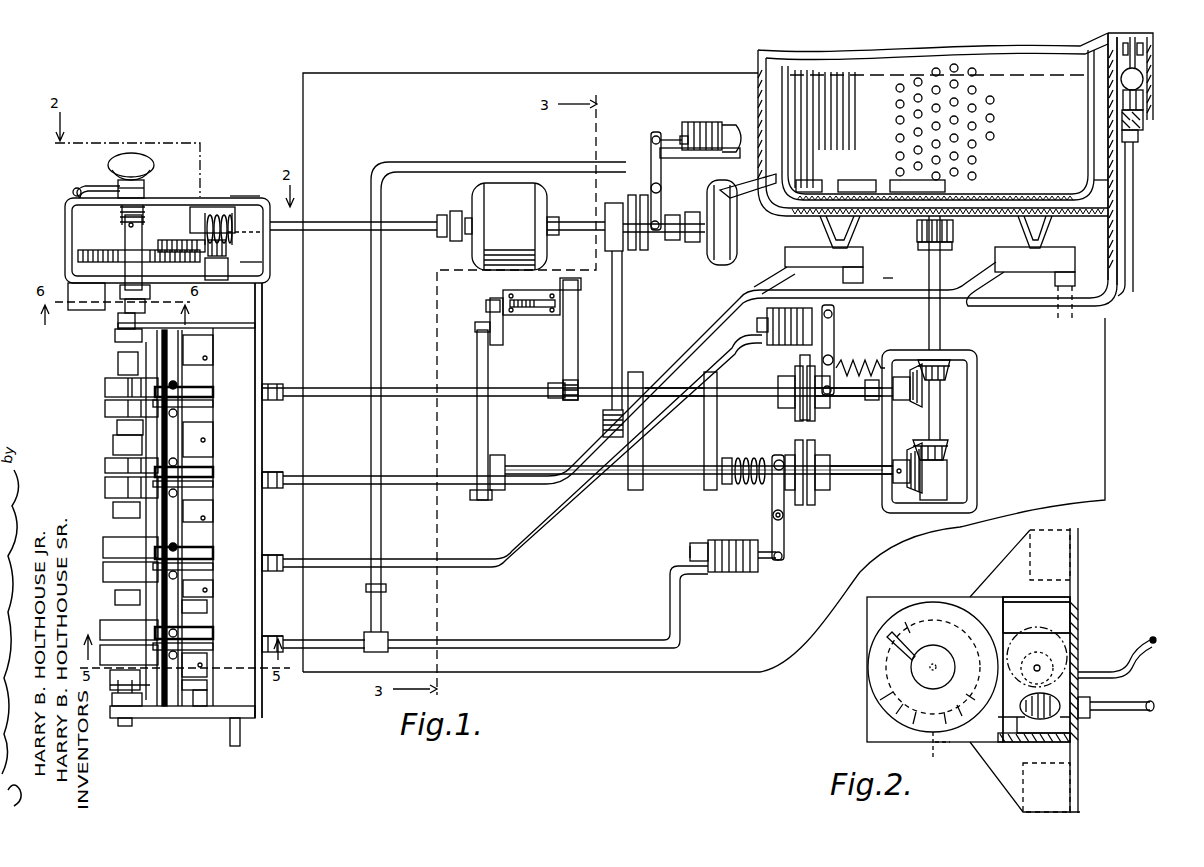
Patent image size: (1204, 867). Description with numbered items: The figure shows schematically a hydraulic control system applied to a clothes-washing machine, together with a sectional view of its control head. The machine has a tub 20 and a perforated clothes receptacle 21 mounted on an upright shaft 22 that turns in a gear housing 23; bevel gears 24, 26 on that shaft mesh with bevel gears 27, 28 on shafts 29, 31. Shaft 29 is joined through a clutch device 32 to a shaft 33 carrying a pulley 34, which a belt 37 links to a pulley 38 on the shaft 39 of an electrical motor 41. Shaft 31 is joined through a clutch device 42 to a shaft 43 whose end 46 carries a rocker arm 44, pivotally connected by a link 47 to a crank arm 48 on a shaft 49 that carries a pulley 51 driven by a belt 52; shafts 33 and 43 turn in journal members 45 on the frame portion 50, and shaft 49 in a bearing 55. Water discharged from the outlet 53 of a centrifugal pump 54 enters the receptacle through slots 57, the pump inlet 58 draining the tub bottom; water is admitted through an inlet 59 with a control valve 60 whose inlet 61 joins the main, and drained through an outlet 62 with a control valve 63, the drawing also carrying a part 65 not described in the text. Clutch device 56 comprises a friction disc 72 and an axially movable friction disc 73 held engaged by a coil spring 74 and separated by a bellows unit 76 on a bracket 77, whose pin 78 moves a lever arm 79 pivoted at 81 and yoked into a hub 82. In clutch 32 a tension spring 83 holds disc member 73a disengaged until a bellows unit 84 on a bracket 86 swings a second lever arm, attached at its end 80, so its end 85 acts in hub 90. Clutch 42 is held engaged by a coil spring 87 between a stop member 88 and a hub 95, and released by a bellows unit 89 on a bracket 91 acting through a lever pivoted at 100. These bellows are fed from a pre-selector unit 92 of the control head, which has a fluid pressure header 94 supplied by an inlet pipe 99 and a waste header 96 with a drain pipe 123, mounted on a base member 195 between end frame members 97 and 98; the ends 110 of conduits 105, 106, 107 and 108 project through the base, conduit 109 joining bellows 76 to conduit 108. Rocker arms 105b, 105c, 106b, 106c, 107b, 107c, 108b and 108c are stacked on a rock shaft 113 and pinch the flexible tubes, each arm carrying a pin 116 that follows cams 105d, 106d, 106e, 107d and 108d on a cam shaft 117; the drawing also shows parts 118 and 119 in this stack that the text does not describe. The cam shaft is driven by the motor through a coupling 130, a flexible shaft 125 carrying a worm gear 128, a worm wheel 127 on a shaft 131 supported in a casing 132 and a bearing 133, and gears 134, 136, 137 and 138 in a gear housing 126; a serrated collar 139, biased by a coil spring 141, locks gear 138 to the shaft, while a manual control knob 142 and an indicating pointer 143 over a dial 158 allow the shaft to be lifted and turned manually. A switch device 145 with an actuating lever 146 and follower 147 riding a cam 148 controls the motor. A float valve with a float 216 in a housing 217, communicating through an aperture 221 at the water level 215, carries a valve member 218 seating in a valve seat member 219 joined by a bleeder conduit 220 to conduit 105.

In FIG. 1, the tub 20 is at (1118, 160).
In FIG. 1, the clothes receptacle 21 is at (1094, 181).
In FIG. 1, the upright shaft 22 is at (942, 334).
In FIG. 1, the gear housing 23 is at (977, 410).
In FIG. 1, the bevel gear 24 is at (952, 370).
In FIG. 1, the bevel gear 26 is at (950, 452).
In FIG. 1, the bevel gear 27 is at (914, 368).
In FIG. 1, the bevel gear 28 is at (912, 498).
In FIG. 1, the shaft 29 is at (883, 400).
In FIG. 1, the shaft 31 is at (850, 476).
In FIG. 1, the clutch device 32 is at (790, 421).
In FIG. 1, the shaft 33 is at (766, 396).
In FIG. 1, the pulley 34 is at (623, 350).
In FIG. 1, the belt 37 is at (623, 306).
In FIG. 1, the pulley 38 is at (610, 221).
In FIG. 1, the motor shaft 39 is at (566, 222).
In FIG. 1, the electrical motor 41 is at (476, 198).
In FIG. 1, the clutch device 42 is at (826, 449).
In FIG. 1, the shaft 43 is at (676, 474).
In FIG. 1, the rocker arm 44 is at (500, 458).
In FIG. 1, the journal members 45 is at (645, 452).
In FIG. 1, the end of shaft 43 46 is at (535, 466).
In FIG. 1, the link 47 is at (489, 426).
In FIG. 1, the crank arm 48 is at (490, 325).
In FIG. 1, the shaft 49 is at (535, 310).
In FIG. 1, the frame portion 50 is at (598, 84).
In FIG. 1, the pulley 51 is at (578, 308).
In FIG. 1, the belt 52 is at (572, 355).
In FIG. 1, the pump outlet 53 is at (778, 176).
In FIG. 1, the centrifugal pump 54 is at (712, 258).
In FIG. 1, the bearing 55 is at (515, 295).
In FIG. 1, the clutch device 56 is at (644, 264).
In FIG. 1, the slots 57 is at (878, 180).
In FIG. 1, the pump inlet 58 is at (776, 264).
In FIG. 1, the inlet 59 is at (1048, 240).
In FIG. 1, the control valve 60 is at (694, 246).
In FIG. 1, the inlet to control valve 61 is at (1075, 270).
In FIG. 1, the outlet 62 is at (846, 240).
In FIG. 1, the control valve 63 is at (871, 260).
In FIG. 1, the pipe 65 is at (895, 277).
In FIG. 1, the friction disc 72 is at (632, 200).
In FIG. 1, the friction disc 73 is at (651, 175).
In FIG. 1, the coil spring 74 is at (680, 228).
In FIG. 1, the bellows unit 76 is at (702, 124).
In FIG. 1, the bracket 77 is at (738, 128).
In FIG. 1, the pin 78 is at (672, 136).
In FIG. 1, the lever arm 79 is at (654, 137).
In FIG. 1, the end of lever arm 79a 80 is at (838, 314).
In FIG. 1, the pivot 81 is at (662, 188).
In FIG. 1, the hub 82 is at (657, 238).
In FIG. 1, the tension spring 83 is at (858, 362).
In FIG. 1, the bellows unit 84 is at (790, 316).
In FIG. 1, the end of lever arm 79a 85 is at (825, 394).
In FIG. 1, the bracket 86 is at (757, 324).
In FIG. 1, the coil spring 87 is at (752, 484).
In FIG. 1, the stop member 88 is at (726, 484).
In FIG. 1, the bellows unit 89 is at (740, 572).
In FIG. 1, the hub 90 is at (796, 399).
In FIG. 1, the bracket 91 is at (694, 543).
In FIG. 1, the pre-selector unit 92 is at (100, 443).
In FIG. 2, the fluid pressure header 94 is at (1060, 790).
In FIG. 1, the hub 95 is at (778, 458).
In FIG. 1, the waste header 96 is at (240, 706).
In FIG. 2, the waste header 96 is at (1062, 538).
In FIG. 1, the end frame member 97 is at (222, 330).
In FIG. 2, the end frame member 97 is at (1003, 568).
In FIG. 1, the end frame member 98 is at (148, 718).
In FIG. 1, the inlet pipe 99 is at (236, 188).
In FIG. 1, the pivot 100 is at (773, 515).
In FIG. 1, the conduit 105 is at (430, 483).
In FIG. 1, the conduit 106 is at (430, 396).
In FIG. 2, the conduit 106 is at (1152, 644).
In FIG. 1, the conduit 107 is at (415, 560).
In FIG. 1, the conduit 108 is at (417, 642).
In FIG. 1, the conduit 109 is at (382, 312).
In FIG. 1, the conduit ends 110 is at (270, 472).
In FIG. 1, the rock shaft 113 is at (198, 706).
In FIG. 1, the pin 116 is at (148, 567).
In FIG. 1, the cam shaft 117 is at (118, 352).
In FIG. 1, the bearing 118 is at (118, 686).
In FIG. 1, the pivot 119 is at (177, 547).
In FIG. 1, the drain pipe 123 is at (240, 745).
In FIG. 1, the flexible shaft 125 is at (317, 226).
In FIG. 2, the flexible shaft 125 is at (1130, 702).
In FIG. 1, the gear housing 126 is at (65, 220).
In FIG. 2, the gear housing 126 is at (1072, 616).
In FIG. 2, the worm wheel 127 is at (1050, 700).
In FIG. 1, the worm gear 128 is at (225, 215).
In FIG. 2, the worm gear 128 is at (1034, 735).
In FIG. 1, the coupling 130 is at (448, 234).
In FIG. 1, the shaft 131 is at (226, 246).
In FIG. 2, the shaft 131 is at (1070, 653).
In FIG. 1, the casing 132 is at (252, 237).
In FIG. 2, the casing 132 is at (1056, 645).
In FIG. 1, the bearing 133 is at (262, 283).
In FIG. 1, the gear 134 is at (228, 268).
In FIG. 1, the gear 136 is at (190, 216).
In FIG. 1, the gear 137 is at (180, 242).
In FIG. 1, the gear 138 is at (96, 250).
In FIG. 1, the serrated collar 139 is at (125, 220).
In FIG. 1, the coil spring 141 is at (145, 207).
In FIG. 1, the manual control knob 142 is at (135, 152).
In FIG. 1, the indicating pointer 143 is at (95, 186).
In FIG. 1, the switch device 145 is at (84, 322).
In FIG. 1, the actuating lever 146 is at (118, 320).
In FIG. 1, the follower 147 is at (145, 292).
In FIG. 1, the cam 148 is at (145, 306).
In FIG. 1, the dial 158 is at (73, 192).
In FIG. 2, the dial 158 is at (1036, 617).
In FIG. 1, the base member 195 is at (263, 696).
In FIG. 2, the base member 195 is at (1080, 562).
In FIG. 1, the water level 215 is at (1015, 76).
In FIG. 1, the float 216 is at (1143, 82).
In FIG. 1, the housing 217 is at (1148, 96).
In FIG. 1, the valve member 218 is at (1143, 122).
In FIG. 1, the valve seat member 219 is at (1140, 137).
In FIG. 1, the bleeder conduit 220 is at (1134, 276).
In FIG. 1, the aperture 221 is at (1088, 92).
In FIG. 1, the cam 106e is at (105, 382).
In FIG. 1, the cam 106d is at (105, 405).
In FIG. 1, the rocker arm 106c is at (205, 392).
In FIG. 1, the rocker arm 106b is at (200, 404).
In FIG. 1, the rocker arm 105c is at (105, 470).
In FIG. 1, the cam 105d is at (105, 494).
In FIG. 1, the rocker arm 105b is at (200, 485).
In FIG. 1, the rocker arm 107c is at (222, 537).
In FIG. 1, the cam 107d is at (130, 572).
In FIG. 1, the rocker arm 107b is at (203, 567).
In FIG. 1, the rocker arm 108c is at (222, 622).
In FIG. 1, the cam 108d is at (129, 655).
In FIG. 1, the rocker arm 108b is at (203, 647).
In FIG. 1, the disc member 73a is at (797, 382).